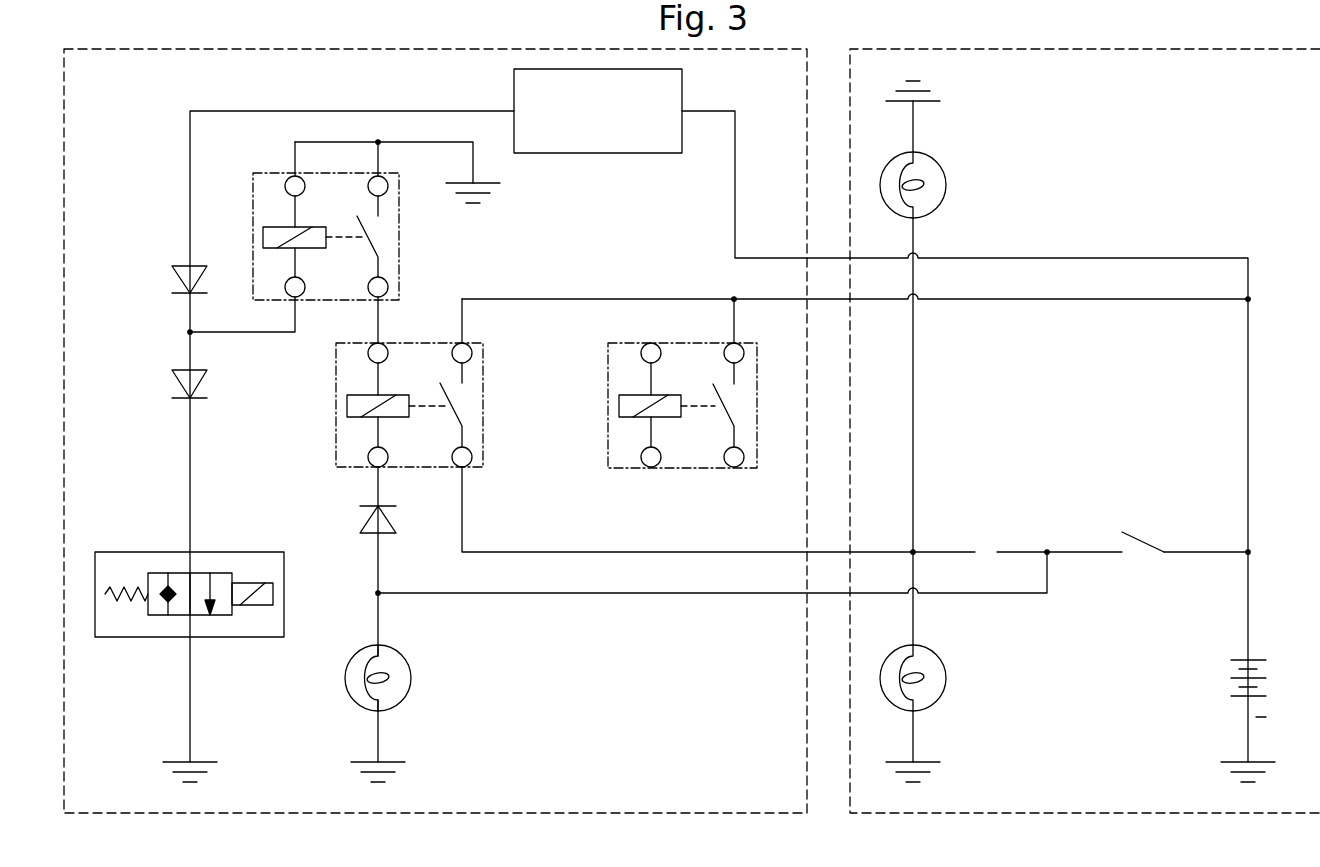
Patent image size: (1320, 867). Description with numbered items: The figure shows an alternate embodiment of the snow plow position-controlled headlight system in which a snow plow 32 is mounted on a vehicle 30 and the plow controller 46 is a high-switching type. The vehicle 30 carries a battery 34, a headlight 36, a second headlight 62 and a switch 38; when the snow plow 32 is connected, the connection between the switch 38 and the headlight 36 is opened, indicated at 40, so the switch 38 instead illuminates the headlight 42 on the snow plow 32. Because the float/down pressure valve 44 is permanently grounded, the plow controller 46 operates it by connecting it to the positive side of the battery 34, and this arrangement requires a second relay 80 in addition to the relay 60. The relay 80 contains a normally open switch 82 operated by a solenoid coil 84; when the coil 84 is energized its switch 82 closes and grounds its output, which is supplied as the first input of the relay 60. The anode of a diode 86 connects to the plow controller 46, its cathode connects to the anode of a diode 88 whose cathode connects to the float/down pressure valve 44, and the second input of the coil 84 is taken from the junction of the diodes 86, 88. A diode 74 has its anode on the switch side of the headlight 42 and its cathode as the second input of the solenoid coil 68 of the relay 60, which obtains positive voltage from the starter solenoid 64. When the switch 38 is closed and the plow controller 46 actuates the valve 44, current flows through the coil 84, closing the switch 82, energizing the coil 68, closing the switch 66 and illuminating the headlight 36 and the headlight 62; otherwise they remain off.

The vehicle 30 is at (1102, 49).
The snow plow 32 is at (388, 49).
The battery 34 is at (1228, 678).
The headlight 36 is at (945, 678).
The switch 38 is at (1143, 533).
The opened electrical connection 40 is at (985, 553).
The headlight 42 is at (408, 678).
The float/down pressure valve 44 is at (210, 552).
The plow controller 46 is at (598, 153).
The relay 60 is at (417, 406).
The second headlight 62 is at (943, 185).
The starter solenoid 64 is at (757, 395).
The switch 66 is at (463, 415).
The solenoid coil 68 is at (358, 394).
The diode 74 is at (365, 520).
The second relay 80 is at (325, 237).
The normally open switch 82 is at (380, 247).
The solenoid coil 84 is at (273, 227).
The diode 86 is at (178, 283).
The diode 88 is at (177, 383).